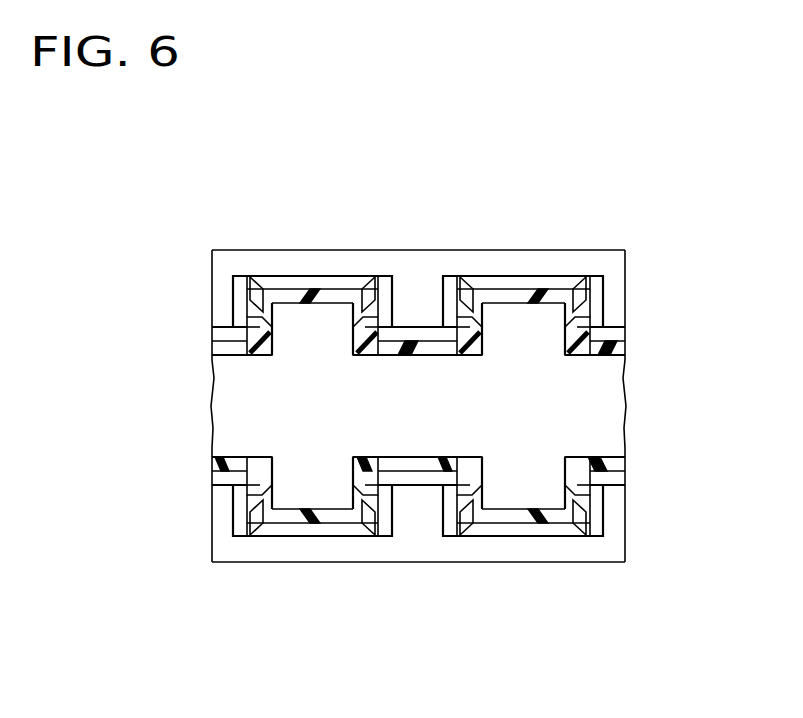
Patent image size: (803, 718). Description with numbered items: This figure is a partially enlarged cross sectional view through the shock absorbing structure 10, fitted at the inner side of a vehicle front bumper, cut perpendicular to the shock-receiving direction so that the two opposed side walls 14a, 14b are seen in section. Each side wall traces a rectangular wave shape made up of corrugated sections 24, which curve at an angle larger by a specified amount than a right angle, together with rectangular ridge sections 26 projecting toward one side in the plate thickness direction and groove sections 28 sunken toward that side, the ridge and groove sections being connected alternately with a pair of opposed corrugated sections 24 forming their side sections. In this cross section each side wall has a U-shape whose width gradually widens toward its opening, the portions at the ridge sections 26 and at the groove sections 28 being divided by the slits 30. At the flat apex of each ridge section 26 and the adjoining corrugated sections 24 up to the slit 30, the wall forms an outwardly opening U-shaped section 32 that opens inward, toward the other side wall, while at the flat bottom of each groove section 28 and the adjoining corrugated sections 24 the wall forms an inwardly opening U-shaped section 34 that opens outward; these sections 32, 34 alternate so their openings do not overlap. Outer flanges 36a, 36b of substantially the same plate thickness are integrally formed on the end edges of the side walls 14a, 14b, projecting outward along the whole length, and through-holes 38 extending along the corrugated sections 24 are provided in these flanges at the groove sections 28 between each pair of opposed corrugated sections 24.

The shock absorbing structure 10 is at (606, 228).
The side wall 14a is at (292, 262).
The side wall 14b is at (337, 556).
The corrugated section 24 is at (252, 292).
The ridge section 26 is at (419, 418).
The groove section 28 is at (437, 409).
The slit 30 is at (270, 315).
The outwardly opening U-shaped section 32 is at (545, 615).
The inwardly opening U-shaped section 34 is at (387, 409).
The outer flange 36a is at (487, 238).
The outer flange 36b is at (278, 568).
The through-hole 38 is at (245, 291).